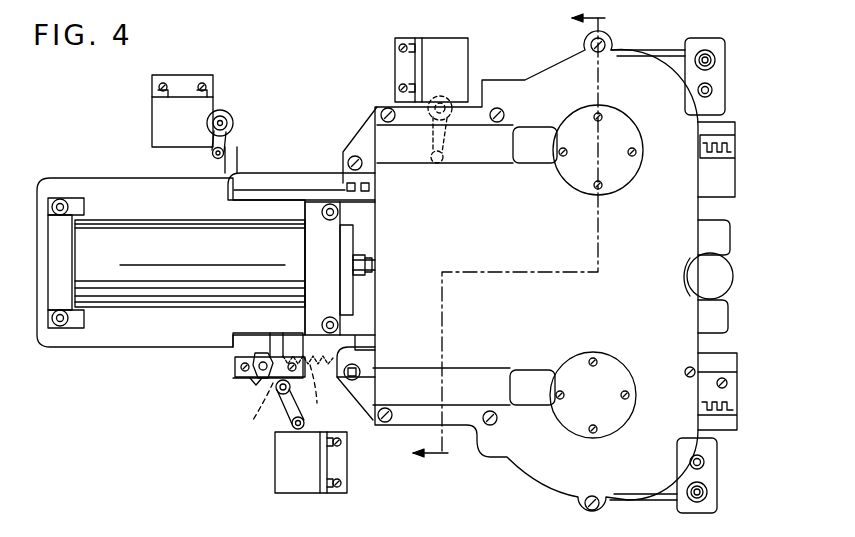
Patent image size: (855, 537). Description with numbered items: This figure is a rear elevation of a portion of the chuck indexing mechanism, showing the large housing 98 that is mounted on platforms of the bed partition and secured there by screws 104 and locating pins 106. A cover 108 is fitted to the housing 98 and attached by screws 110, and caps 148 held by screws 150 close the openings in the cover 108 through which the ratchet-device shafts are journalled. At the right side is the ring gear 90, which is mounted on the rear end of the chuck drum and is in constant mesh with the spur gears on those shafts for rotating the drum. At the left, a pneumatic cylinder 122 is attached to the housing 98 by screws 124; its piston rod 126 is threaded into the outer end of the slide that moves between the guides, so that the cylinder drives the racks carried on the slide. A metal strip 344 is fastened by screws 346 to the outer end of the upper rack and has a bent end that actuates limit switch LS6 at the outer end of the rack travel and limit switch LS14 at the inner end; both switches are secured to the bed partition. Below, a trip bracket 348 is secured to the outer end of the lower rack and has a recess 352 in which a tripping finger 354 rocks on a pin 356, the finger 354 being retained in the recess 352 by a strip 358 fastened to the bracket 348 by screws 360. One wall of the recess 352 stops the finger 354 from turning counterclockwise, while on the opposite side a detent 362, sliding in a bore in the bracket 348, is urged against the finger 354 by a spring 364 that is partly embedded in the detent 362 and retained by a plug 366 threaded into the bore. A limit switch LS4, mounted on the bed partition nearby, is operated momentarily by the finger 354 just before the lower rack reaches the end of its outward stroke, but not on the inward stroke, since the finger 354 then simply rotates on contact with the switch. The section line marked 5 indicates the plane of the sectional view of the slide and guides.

The housing 98 is at (143, 342).
The screws 124 is at (58, 192).
The pneumatic cylinder 122 is at (199, 237).
The piston rod 126 is at (363, 266).
The metal strip 344 is at (287, 193).
The screws 346 is at (371, 190).
The limit switch LS6 is at (192, 117).
The limit switch LS14 is at (452, 52).
The limit switch LS4 is at (275, 480).
The cover 108 is at (526, 209).
The screws 110 is at (503, 110).
The caps 148 is at (622, 130).
The screws 150 is at (634, 154).
The screws 104 is at (352, 158).
The locating pins 106 is at (716, 60).
The ring gear 90 is at (726, 393).
The plug 366 is at (363, 365).
The trip bracket 348 is at (238, 343).
The screws 360 is at (233, 366).
The recess 352 is at (258, 352).
The detent 362 is at (282, 352).
The tripping finger 354 is at (262, 385).
The strip 358 is at (252, 379).
The pin 356 is at (270, 405).
The spring 364 is at (294, 394).
The section line 5- 5 is at (516, 245).